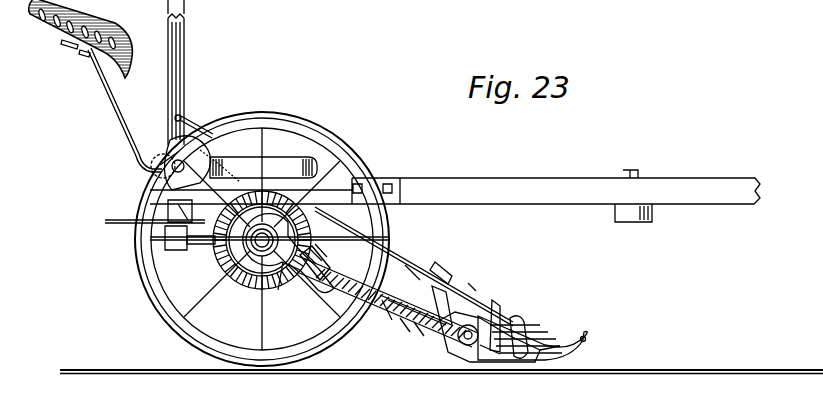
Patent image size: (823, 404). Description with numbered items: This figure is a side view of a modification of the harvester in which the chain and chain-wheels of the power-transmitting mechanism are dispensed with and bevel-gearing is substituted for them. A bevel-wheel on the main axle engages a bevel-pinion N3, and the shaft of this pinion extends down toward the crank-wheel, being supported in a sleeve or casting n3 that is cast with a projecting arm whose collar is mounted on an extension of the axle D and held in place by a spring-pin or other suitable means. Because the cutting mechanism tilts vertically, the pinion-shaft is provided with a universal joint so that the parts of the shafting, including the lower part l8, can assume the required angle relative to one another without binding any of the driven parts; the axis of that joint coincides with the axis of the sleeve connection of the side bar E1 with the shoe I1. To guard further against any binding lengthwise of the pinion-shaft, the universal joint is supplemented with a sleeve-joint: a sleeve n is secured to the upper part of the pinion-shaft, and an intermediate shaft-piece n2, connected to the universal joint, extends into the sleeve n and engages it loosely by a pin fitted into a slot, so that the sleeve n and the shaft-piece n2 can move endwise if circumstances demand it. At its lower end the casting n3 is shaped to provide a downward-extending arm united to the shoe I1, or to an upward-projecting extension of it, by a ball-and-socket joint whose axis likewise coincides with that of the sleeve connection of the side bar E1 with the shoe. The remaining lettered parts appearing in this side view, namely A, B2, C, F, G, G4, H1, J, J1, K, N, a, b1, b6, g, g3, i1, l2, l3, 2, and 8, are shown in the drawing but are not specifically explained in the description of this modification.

The wheel C is at (345, 145).
The axle D is at (262, 258).
The bracket N is at (236, 262).
The bevel-pinion N3 is at (318, 282).
The sleeve n is at (286, 300).
The side bar E1 is at (405, 325).
The rod J1 is at (425, 252).
The beam A is at (560, 186).
The bracket b1 is at (402, 180).
The block H1 is at (372, 182).
The axle F is at (336, 250).
The post J is at (184, 84).
The post top a is at (187, 7).
The cam G is at (190, 148).
The pivot g is at (160, 160).
The link g3 is at (214, 158).
The bar G4 is at (116, 222).
The seat rod b6 is at (118, 128).
The seat B2 is at (85, 32).
The bracket K is at (494, 300).
The shafting part l8 is at (500, 325).
The shoe I1 is at (532, 324).
The runner part l3 is at (540, 342).
The runner part l2 is at (498, 358).
The sleeve or casting n3 is at (420, 262).
The intermediate shaft-piece n2 is at (443, 271).
The pin 8 is at (479, 276).
The link 2 is at (193, 122).
The part i1 is at (413, 335).